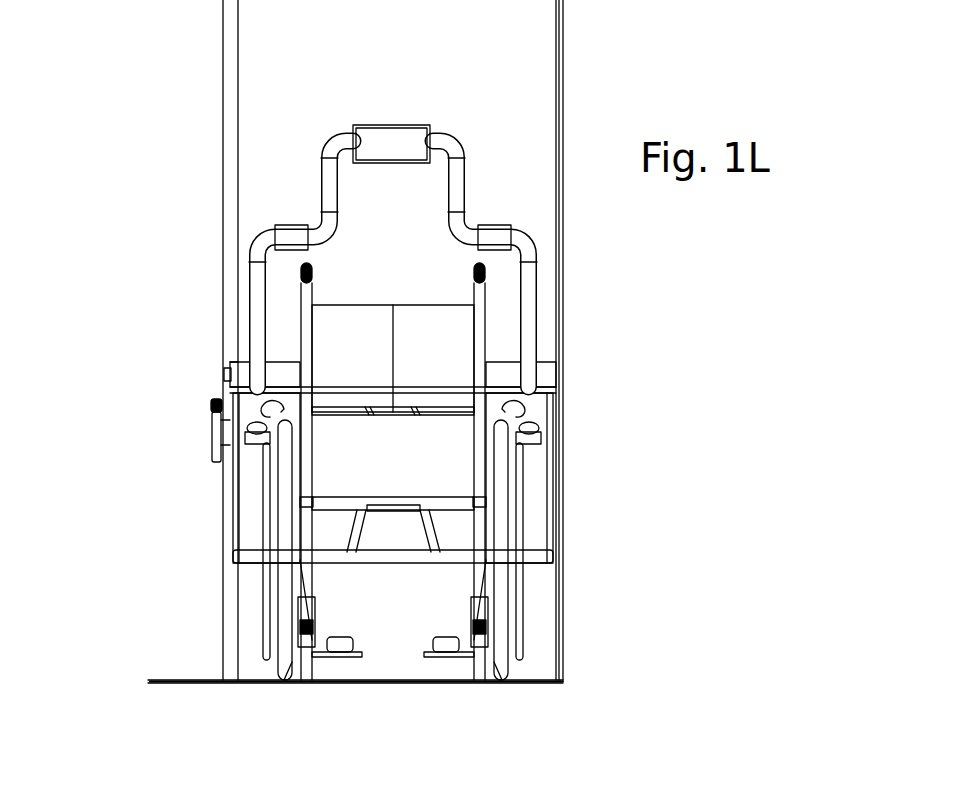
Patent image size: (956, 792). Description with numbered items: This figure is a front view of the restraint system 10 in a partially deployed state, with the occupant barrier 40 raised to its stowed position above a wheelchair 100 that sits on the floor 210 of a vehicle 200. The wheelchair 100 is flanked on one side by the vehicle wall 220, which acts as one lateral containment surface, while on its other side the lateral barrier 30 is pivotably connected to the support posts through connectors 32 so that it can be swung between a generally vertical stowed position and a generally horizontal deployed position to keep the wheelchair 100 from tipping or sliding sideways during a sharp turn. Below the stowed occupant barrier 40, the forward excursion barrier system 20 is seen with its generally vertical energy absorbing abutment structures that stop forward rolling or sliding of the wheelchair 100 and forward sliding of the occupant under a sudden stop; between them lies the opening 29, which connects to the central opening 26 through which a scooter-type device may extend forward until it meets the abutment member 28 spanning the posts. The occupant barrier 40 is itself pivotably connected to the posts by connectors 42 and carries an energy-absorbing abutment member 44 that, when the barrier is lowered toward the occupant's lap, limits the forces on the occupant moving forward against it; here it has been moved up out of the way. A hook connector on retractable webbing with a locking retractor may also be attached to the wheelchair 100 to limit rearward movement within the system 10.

The system 10 is at (200, 321).
The forward excursion barrier system 20 is at (200, 487).
The opening 26 is at (397, 657).
The abutment member 28 is at (407, 533).
The opening 29 is at (402, 492).
The lateral barrier 30 is at (210, 453).
The connector 32 is at (225, 408).
The occupant barrier 40 is at (465, 153).
The connector 42 is at (224, 374).
The abutment member 44 is at (386, 125).
The wheelchair 100 is at (297, 262).
The vehicle 200 is at (584, 84).
The floor 210 is at (180, 680).
The vehicle wall 220 is at (563, 586).